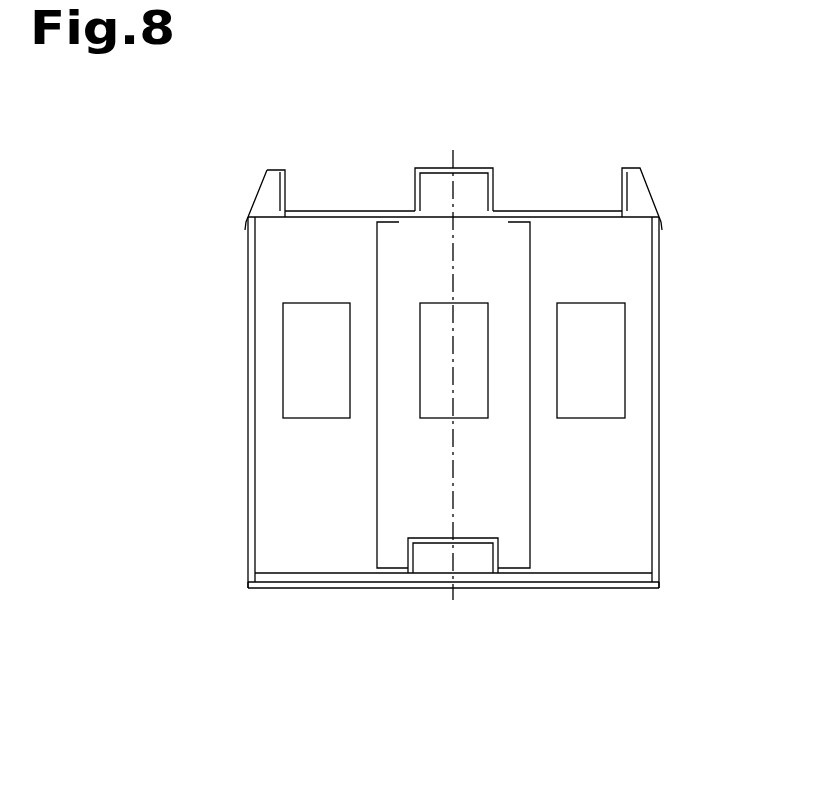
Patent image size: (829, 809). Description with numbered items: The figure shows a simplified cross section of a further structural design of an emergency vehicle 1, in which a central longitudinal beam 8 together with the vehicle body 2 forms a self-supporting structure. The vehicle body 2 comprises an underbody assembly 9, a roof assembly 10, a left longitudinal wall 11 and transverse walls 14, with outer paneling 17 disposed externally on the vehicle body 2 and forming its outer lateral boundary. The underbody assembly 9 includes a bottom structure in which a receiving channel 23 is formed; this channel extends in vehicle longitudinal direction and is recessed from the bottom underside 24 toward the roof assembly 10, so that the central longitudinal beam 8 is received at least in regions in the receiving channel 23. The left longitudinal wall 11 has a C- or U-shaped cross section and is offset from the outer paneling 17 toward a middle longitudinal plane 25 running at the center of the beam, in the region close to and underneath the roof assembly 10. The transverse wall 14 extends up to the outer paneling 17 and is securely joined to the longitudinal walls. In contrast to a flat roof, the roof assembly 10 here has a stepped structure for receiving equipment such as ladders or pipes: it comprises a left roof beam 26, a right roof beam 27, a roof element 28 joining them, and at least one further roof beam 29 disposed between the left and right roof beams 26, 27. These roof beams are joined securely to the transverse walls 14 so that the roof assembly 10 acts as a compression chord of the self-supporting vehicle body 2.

The emergency vehicle 1 is at (630, 142).
The vehicle body 2 is at (640, 165).
The central longitudinal beam 8 is at (428, 585).
The underbody assembly 9 is at (377, 585).
The roof assembly 10 is at (252, 172).
The left longitudinal wall 11 is at (370, 274).
The transverse wall 14 is at (595, 525).
The outer paneling 17 is at (248, 537).
The receiving channel 23 is at (490, 548).
The bottom underside 24 is at (270, 583).
The middle longitudinal plane 25 is at (453, 527).
The left roof beam 26 is at (262, 195).
The right roof beam 27 is at (640, 187).
The roof element 28 is at (353, 180).
The further roof beam 29 is at (480, 180).